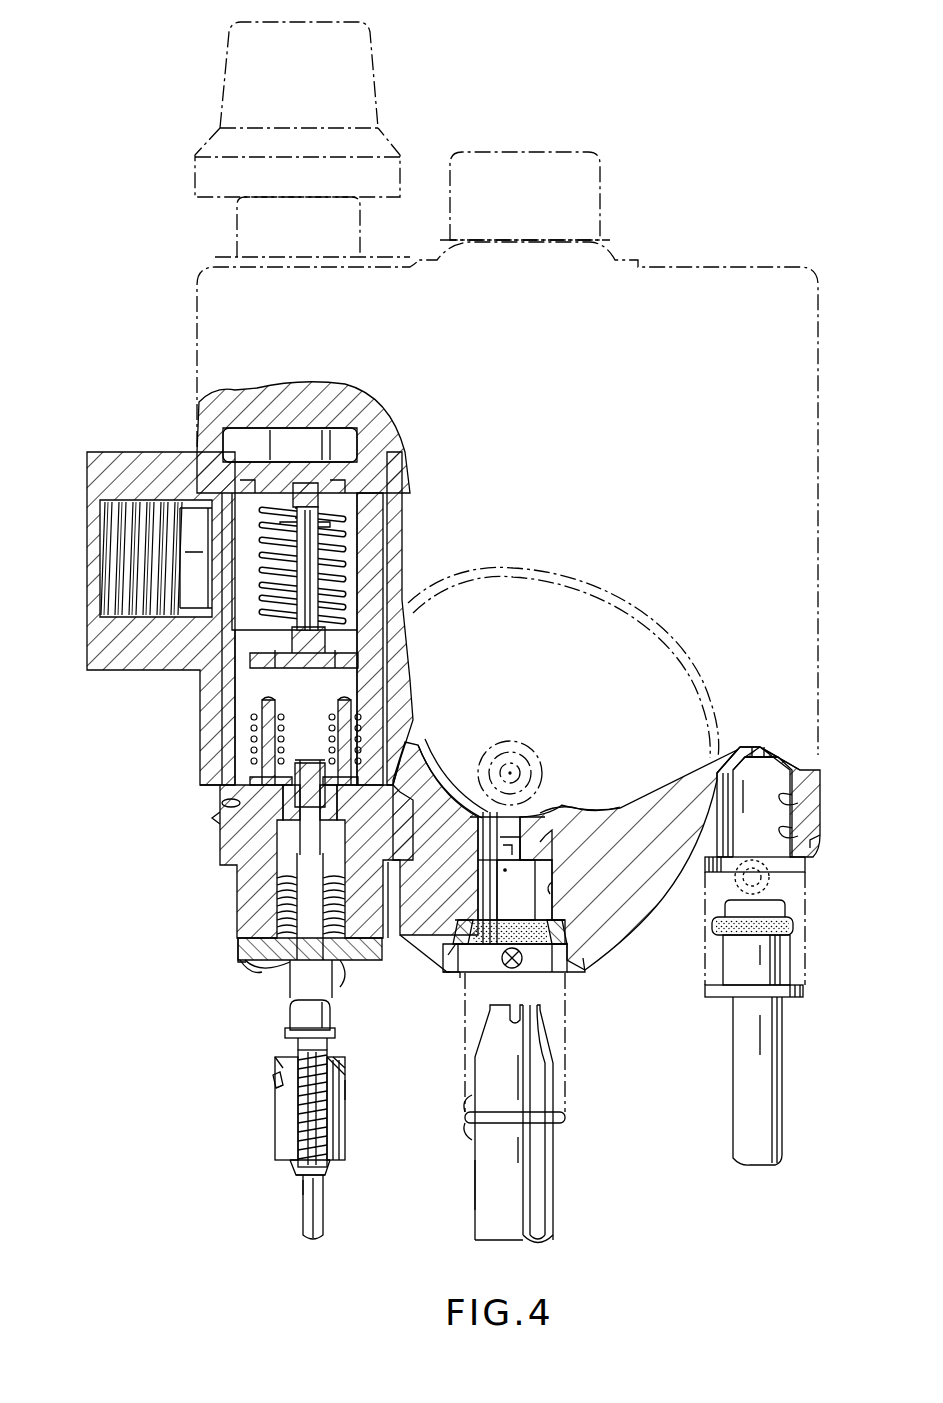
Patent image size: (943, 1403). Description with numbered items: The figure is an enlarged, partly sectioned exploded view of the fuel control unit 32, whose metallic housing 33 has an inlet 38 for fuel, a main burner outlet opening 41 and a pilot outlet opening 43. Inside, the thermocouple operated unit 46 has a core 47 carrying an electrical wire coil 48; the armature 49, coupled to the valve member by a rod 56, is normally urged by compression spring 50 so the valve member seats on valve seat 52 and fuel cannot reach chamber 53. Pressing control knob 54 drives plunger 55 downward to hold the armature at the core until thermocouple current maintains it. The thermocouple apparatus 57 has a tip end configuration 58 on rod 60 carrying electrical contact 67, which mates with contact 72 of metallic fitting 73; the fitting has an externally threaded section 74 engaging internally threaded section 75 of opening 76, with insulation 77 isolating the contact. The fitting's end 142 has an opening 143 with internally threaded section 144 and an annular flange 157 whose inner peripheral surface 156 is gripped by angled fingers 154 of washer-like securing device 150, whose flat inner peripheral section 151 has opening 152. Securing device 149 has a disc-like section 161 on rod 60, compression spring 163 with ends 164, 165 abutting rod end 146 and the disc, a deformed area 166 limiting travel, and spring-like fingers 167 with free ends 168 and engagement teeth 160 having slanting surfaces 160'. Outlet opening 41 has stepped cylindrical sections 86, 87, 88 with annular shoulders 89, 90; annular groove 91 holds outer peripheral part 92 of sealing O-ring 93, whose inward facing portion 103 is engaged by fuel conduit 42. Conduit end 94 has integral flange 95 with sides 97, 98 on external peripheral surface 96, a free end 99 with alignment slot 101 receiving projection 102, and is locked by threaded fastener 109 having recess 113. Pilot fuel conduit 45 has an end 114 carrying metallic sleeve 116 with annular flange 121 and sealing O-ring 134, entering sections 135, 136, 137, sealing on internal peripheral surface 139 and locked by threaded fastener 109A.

The fuel control unit 32 is at (158, 880).
The housing 33 is at (670, 907).
The inlet 38 is at (130, 606).
The outlet opening passageway 41 is at (548, 874).
The fuel conduit 42 is at (553, 1195).
The outlet opening 43 is at (805, 806).
The fuel conduit 45 is at (783, 1082).
The thermocouple operated unit 46 is at (246, 750).
The core 47 is at (255, 710).
The electrical wire coil 48 is at (262, 738).
The armature 49 is at (380, 673).
The compression spring 50 is at (320, 565).
The valve seat 52 is at (375, 470).
The chamber 53 is at (372, 430).
The control knob 54 is at (240, 78).
The plunger 55 is at (280, 430).
The rod 56 is at (348, 542).
The thermocouple apparatus 57 is at (262, 1137).
The tip end configuration 58 is at (355, 1090).
The rod 60 is at (323, 1210).
The electrical contact 67 is at (327, 1022).
The contact 72 is at (330, 812).
The metallic fitting 73 is at (235, 840).
The externally threaded section 74 is at (218, 822).
The internally threaded section 75 is at (228, 800).
The opening 76 is at (392, 748).
The insulation 77 is at (420, 778).
The cylindrical section 86 is at (560, 975).
The cylindrical section 87 is at (556, 893).
The cylindrical section 88 is at (540, 812).
The annular shoulder 89 is at (562, 927).
The annular shoulder 90 is at (548, 845).
The annular groove 91 is at (425, 953).
The outer peripheral part 92 is at (460, 958).
The sealing O-ring 93 is at (570, 963).
The end 94 is at (538, 1143).
The integral flange 95 is at (566, 1116).
The external peripheral surface 96 is at (482, 1181).
The side 97 is at (472, 1126).
The side 98 is at (468, 1110).
The free end 99 is at (495, 1004).
The alignment slot 101 is at (542, 1004).
The projection 102 is at (480, 845).
The inward facing portion 103 is at (470, 976).
The threaded fastener 109 is at (478, 889).
The threaded fastener 109A is at (772, 880).
The recess 113 is at (478, 909).
The end 114 is at (783, 1022).
The metallic sleeve 116 is at (790, 955).
The annular flange 121 is at (803, 991).
The sealing O-ring 134 is at (795, 926).
The section 135 is at (805, 866).
The section 136 is at (812, 842).
The section 137 is at (770, 746).
The internal peripheral surface 139 is at (727, 760).
The end 142 is at (238, 944).
The opening 143 is at (278, 910).
The internally threaded section 144 is at (275, 888).
The end 146 is at (275, 1048).
The securing device 149 is at (273, 1106).
The securing device 150 is at (250, 967).
The inner peripheral section 151 is at (340, 965).
The opening 152 is at (292, 958).
The angled fingers 154 is at (290, 965).
The inner peripheral surface 156 is at (255, 967).
The annular flange 157 is at (262, 956).
The engagement teeth 160 is at (225, 1086).
The slanting surfaces 160' is at (223, 1070).
The disc-like section 161 is at (292, 1182).
The compression spring 163 is at (330, 1117).
The end 164 is at (335, 1043).
The end 165 is at (290, 1167).
The deformed area 166 is at (300, 1192).
The spring-like fingers 167 is at (275, 1123).
The free ends 168 is at (290, 1060).